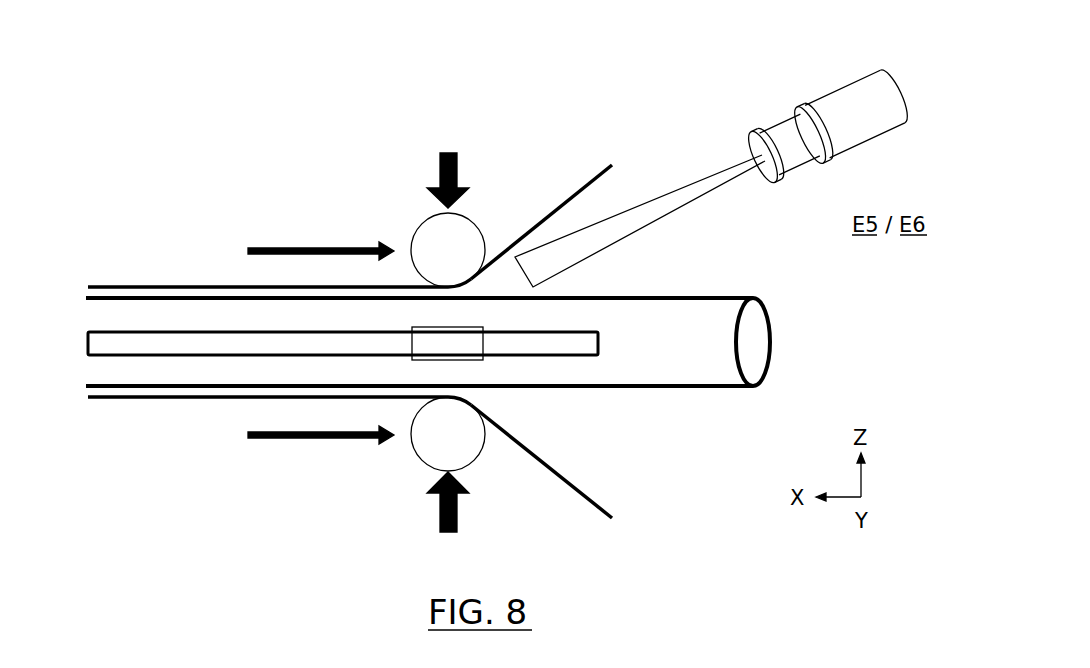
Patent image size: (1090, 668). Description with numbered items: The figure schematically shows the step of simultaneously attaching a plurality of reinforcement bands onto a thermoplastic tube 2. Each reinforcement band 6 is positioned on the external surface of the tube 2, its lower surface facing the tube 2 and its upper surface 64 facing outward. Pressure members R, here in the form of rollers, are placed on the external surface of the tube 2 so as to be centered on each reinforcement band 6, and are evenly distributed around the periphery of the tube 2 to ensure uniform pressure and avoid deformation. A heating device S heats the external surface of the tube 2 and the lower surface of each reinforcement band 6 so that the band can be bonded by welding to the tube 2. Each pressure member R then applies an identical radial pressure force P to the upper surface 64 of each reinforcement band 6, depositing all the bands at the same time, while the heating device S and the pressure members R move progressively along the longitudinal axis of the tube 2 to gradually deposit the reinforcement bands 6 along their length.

The tube 2 is at (771, 337).
The reinforcement band 6 is at (187, 285).
The upper surface 64 is at (522, 236).
The pressure member R is at (412, 240).
The pressure force P is at (358, 345).
The heating device S is at (833, 88).